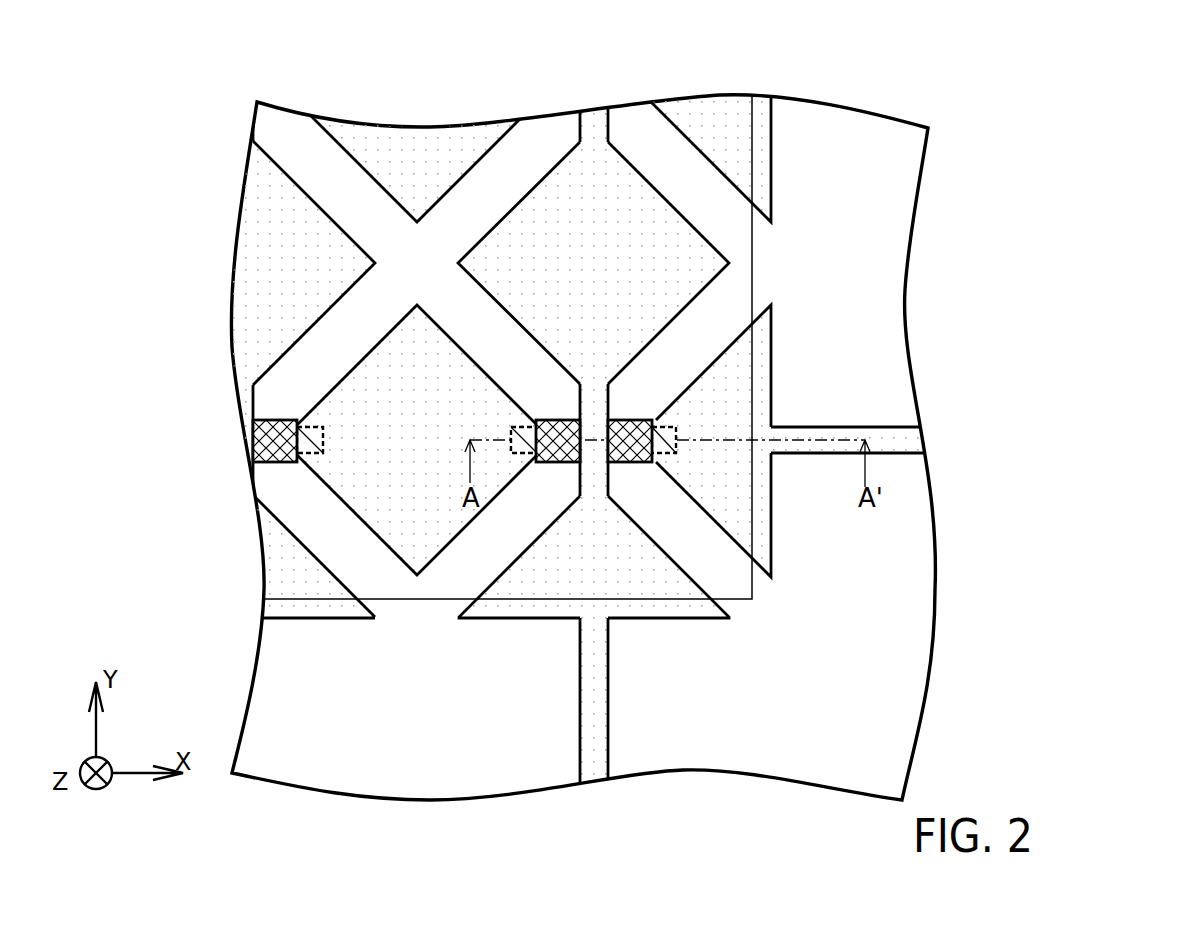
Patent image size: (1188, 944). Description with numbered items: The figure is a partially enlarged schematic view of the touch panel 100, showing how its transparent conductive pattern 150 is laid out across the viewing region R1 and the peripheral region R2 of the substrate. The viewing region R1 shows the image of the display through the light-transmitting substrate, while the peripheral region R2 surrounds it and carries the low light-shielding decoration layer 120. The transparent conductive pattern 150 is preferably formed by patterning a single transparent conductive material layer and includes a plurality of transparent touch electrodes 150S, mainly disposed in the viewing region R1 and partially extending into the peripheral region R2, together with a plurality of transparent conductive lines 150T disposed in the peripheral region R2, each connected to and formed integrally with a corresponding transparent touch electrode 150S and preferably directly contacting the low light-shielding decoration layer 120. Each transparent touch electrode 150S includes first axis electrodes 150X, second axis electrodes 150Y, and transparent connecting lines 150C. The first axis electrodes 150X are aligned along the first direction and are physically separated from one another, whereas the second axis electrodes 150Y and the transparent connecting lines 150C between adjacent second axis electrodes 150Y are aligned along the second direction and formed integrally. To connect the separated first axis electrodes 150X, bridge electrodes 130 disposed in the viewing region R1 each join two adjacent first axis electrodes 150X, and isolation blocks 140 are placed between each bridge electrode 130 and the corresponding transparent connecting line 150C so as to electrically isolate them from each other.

The touch panel 100 is at (950, 75).
The low light-shielding decoration layer 120 is at (880, 275).
The bridge electrode 130 is at (313, 446).
The isolation block 140 is at (272, 430).
The transparent conductive pattern 150 is at (1092, 525).
The transparent touch electrode 150S is at (650, 382).
The first axis electrode 150X is at (410, 540).
The second axis electrode 150Y is at (563, 188).
The transparent connecting line 150C is at (602, 128).
The transparent conductive line 150T is at (890, 447).
The viewing region R1 is at (752, 247).
The peripheral region R2 is at (925, 162).